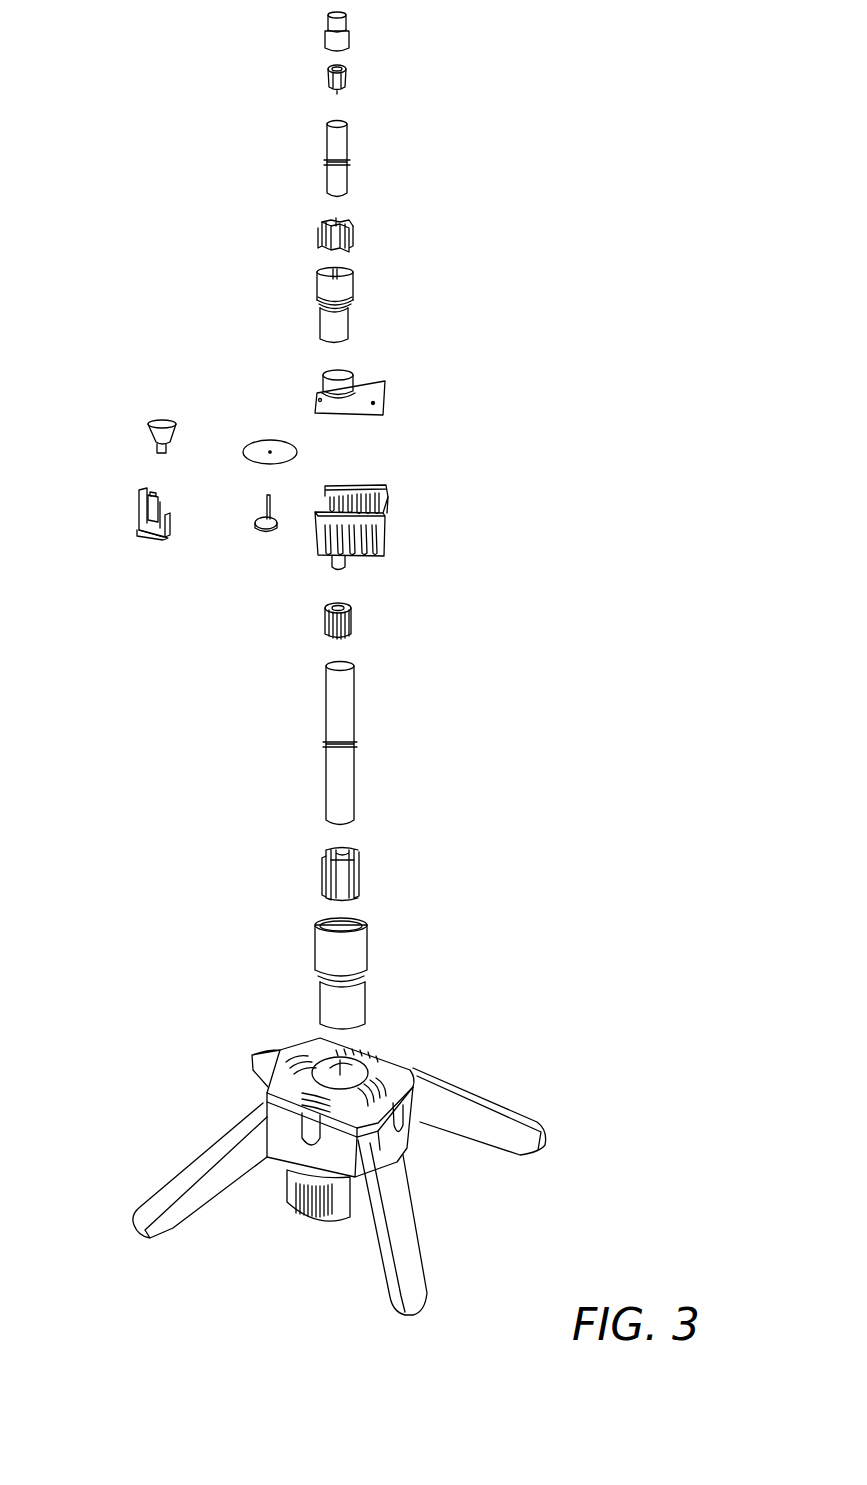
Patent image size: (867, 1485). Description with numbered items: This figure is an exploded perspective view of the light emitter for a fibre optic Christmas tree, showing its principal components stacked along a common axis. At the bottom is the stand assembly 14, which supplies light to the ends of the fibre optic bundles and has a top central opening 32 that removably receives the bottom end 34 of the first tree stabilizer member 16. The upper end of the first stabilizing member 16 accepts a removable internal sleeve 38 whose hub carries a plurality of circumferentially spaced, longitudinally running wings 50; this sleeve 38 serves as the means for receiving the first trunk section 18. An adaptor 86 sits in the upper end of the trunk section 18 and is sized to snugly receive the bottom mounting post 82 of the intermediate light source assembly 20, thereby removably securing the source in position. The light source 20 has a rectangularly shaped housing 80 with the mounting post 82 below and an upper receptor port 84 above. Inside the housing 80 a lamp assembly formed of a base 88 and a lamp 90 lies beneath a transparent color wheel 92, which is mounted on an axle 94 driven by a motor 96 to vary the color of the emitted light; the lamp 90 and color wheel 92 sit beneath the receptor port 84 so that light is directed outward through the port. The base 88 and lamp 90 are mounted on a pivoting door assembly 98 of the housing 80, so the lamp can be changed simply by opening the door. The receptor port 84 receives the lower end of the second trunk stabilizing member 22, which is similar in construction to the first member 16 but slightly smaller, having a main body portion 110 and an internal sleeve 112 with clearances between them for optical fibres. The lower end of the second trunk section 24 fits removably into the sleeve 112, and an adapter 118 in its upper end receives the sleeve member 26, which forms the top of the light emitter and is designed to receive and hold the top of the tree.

The stand assembly 14 is at (339, 1152).
The first tree stabilizer member 16 is at (372, 933).
The first trunk section 18 is at (357, 780).
The intermediate light source assembly 20 is at (350, 371).
The second trunk stabilizing member 22 is at (418, 308).
The second trunk section 24 is at (348, 175).
The sleeve member 26 is at (349, 38).
The top central opening 32 is at (357, 1040).
The bottom end 34 is at (365, 988).
The internal sleeve 38 is at (315, 875).
The wings 50 is at (332, 876).
The housing 80 is at (350, 571).
The bottom mounting post 82 is at (332, 560).
The upper receptor port 84 is at (333, 370).
The adaptor 86 is at (355, 622).
The base 88 is at (145, 512).
The lamp 90 is at (152, 438).
The transparent color wheel 92 is at (270, 440).
The axle 94 is at (272, 512).
The motor 96 is at (257, 529).
The pivoting door assembly 98 is at (138, 518).
The main body portion 110 is at (353, 292).
The internal sleeve 112 is at (355, 240).
The adapter 118 is at (347, 78).